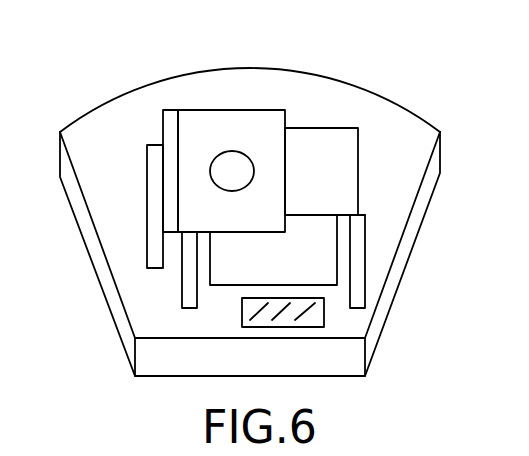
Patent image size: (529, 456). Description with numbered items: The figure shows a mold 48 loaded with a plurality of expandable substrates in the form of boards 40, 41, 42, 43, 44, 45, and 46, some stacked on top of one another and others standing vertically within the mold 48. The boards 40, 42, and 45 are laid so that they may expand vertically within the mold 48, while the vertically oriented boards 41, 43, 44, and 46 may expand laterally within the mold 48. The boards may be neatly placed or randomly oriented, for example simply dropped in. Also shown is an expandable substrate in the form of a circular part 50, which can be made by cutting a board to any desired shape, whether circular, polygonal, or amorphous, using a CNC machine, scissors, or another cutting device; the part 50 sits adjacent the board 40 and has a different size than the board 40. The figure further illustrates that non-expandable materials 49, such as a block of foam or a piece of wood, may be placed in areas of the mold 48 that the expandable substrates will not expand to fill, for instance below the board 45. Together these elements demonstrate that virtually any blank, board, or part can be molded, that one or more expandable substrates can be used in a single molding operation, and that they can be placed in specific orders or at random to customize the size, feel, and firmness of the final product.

The board 40 is at (238, 120).
The board 41 is at (168, 120).
The board 42 is at (338, 137).
The board 43 is at (152, 190).
The board 44 is at (188, 283).
The board 45 is at (322, 248).
The board 46 is at (365, 223).
The mold 48 is at (422, 117).
The non-expandable materials 49 is at (327, 312).
The part 50 is at (220, 168).